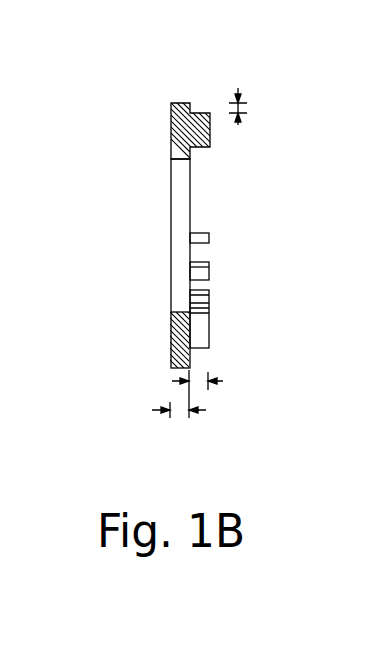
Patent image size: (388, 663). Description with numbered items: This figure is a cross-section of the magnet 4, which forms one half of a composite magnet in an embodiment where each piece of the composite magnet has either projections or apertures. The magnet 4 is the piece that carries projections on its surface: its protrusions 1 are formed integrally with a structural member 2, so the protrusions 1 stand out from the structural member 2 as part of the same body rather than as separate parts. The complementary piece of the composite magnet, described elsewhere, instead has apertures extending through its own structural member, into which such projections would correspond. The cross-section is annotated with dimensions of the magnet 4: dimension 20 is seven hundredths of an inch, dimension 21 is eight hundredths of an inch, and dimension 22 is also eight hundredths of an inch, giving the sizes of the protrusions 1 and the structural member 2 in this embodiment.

The protrusions 1 is at (210, 131).
The structural member 2 is at (171, 215).
The magnet 4 is at (234, 235).
The dimension 20 is at (239, 93).
The dimension 21 is at (209, 393).
The dimension 22 is at (166, 409).